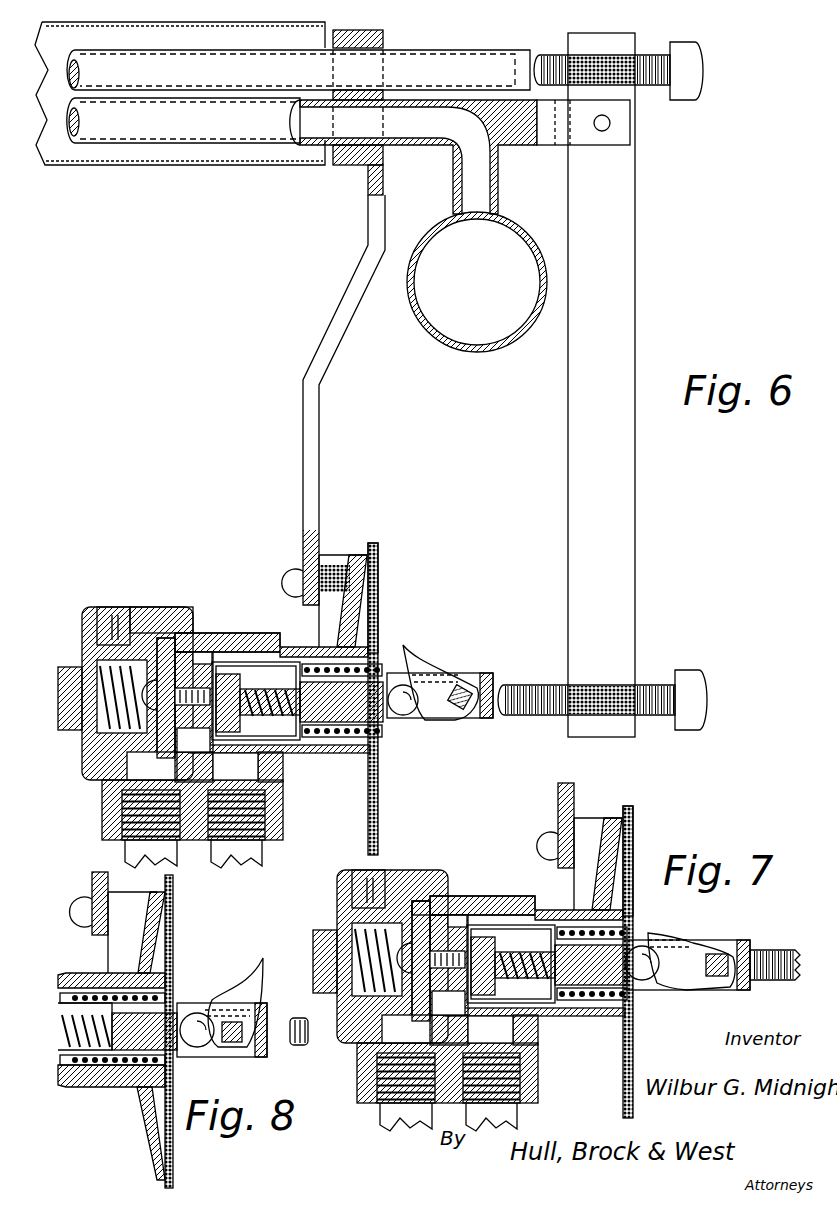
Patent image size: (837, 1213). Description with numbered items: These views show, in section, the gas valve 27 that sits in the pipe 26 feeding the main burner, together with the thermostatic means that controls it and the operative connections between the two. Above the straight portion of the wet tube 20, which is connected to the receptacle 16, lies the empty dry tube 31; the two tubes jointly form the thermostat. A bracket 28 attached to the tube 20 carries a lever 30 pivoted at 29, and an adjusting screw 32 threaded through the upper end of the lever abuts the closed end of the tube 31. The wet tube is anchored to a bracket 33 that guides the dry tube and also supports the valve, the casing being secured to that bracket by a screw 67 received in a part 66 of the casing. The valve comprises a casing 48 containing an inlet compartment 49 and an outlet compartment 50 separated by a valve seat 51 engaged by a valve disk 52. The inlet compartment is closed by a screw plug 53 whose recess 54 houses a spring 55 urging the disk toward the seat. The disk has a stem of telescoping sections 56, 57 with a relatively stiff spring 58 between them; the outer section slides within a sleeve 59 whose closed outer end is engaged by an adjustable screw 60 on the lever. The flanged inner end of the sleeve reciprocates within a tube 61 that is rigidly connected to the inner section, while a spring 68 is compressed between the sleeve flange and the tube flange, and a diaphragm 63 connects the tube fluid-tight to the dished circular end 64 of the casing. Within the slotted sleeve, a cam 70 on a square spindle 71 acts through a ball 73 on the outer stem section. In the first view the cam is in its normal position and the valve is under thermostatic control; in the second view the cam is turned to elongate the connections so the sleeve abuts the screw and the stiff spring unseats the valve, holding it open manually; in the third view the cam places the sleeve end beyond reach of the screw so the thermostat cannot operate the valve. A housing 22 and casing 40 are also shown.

In FIG. 6, the receptacle 16 is at (490, 345).
In FIG. 6, the tube 20 is at (232, 125).
In FIG. 8, the housing 22 is at (101, 1094).
In FIG. 6, the pipe 26 is at (120, 853).
In FIG. 7, the pipe 26 is at (453, 1095).
In FIG. 6, the valve 27 is at (244, 630).
In FIG. 7, the valve 27 is at (491, 980).
In FIG. 6, the bracket 28 is at (555, 145).
In FIG. 6, the pivot 29 is at (612, 123).
In FIG. 6, the lever 30 is at (601, 385).
In FIG. 6, the thermostatic element or tube 31 is at (448, 50).
In FIG. 6, the screw 32 is at (552, 55).
In FIG. 6, the bracket 33 is at (366, 268).
In FIG. 7, the bracket 33 is at (543, 825).
In FIG. 8, the bracket 33 is at (92, 882).
In FIG. 6, the casing 40 is at (122, 170).
In FIG. 6, the casing 48 is at (172, 612).
In FIG. 6, the inlet compartment 49 is at (133, 620).
In FIG. 7, the inlet compartment 49 is at (385, 874).
In FIG. 6, the outlet compartment 50 is at (197, 650).
In FIG. 7, the outlet compartment 50 is at (482, 905).
In FIG. 6, the valve seat 51 is at (180, 752).
In FIG. 7, the valve seat 51 is at (431, 930).
In FIG. 7, the valve disk or body 52 is at (433, 865).
In FIG. 6, the screw plug 53 is at (82, 633).
In FIG. 7, the screw plug 53 is at (370, 956).
In FIG. 6, the recess 54 is at (85, 735).
In FIG. 7, the recess 54 is at (310, 961).
In FIG. 6, the spring 55 is at (62, 690).
In FIG. 7, the spring 55 is at (334, 957).
In FIG. 6, the inner stem section 56 is at (205, 655).
In FIG. 7, the inner stem section 56 is at (482, 897).
In FIG. 6, the outer stem section 57 is at (305, 745).
In FIG. 7, the outer stem section 57 is at (536, 999).
In FIG. 6, the stiff spring 58 is at (277, 650).
In FIG. 7, the stiff spring 58 is at (511, 933).
In FIG. 6, the sleeve 59 is at (470, 725).
In FIG. 7, the sleeve 59 is at (688, 978).
In FIG. 6, the screw 60 is at (529, 685).
In FIG. 7, the screw 60 is at (781, 949).
In FIG. 8, the screw 60 is at (305, 1047).
In FIG. 6, the tube 61 is at (329, 648).
In FIG. 7, the tube 61 is at (598, 864).
In FIG. 8, the tube 61 is at (122, 985).
In FIG. 6, the diaphragm 63 is at (380, 773).
In FIG. 7, the diaphragm 63 is at (649, 962).
In FIG. 8, the diaphragm 63 is at (173, 938).
In FIG. 6, the dished circular end 64 is at (380, 605).
In FIG. 7, the dished circular end 64 is at (655, 861).
In FIG. 6, the casing part 66 is at (348, 555).
In FIG. 6, the screw 67 is at (291, 588).
In FIG. 6, the spring 68 is at (335, 745).
In FIG. 7, the spring 68 is at (591, 997).
In FIG. 6, the cam 70 is at (422, 660).
In FIG. 7, the cam 70 is at (691, 948).
In FIG. 8, the cam 70 is at (243, 980).
In FIG. 6, the square spindle 71 is at (458, 690).
In FIG. 7, the square spindle 71 is at (735, 939).
In FIG. 8, the square spindle 71 is at (258, 1050).
In FIG. 6, the ball 73 is at (405, 716).
In FIG. 7, the ball 73 is at (651, 986).
In FIG. 8, the ball 73 is at (196, 1013).